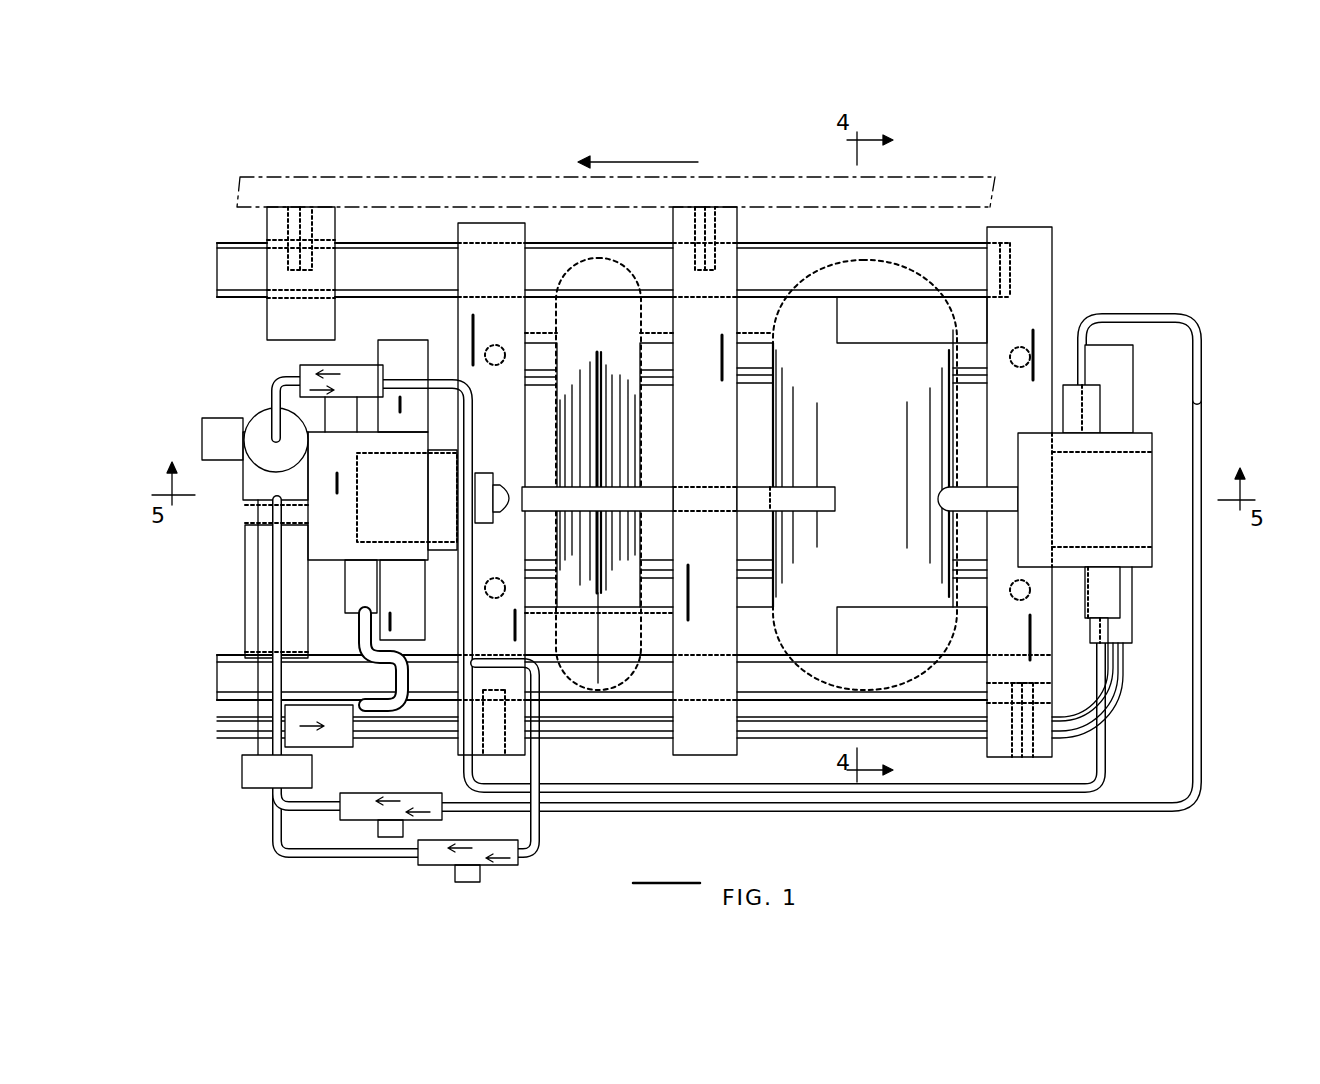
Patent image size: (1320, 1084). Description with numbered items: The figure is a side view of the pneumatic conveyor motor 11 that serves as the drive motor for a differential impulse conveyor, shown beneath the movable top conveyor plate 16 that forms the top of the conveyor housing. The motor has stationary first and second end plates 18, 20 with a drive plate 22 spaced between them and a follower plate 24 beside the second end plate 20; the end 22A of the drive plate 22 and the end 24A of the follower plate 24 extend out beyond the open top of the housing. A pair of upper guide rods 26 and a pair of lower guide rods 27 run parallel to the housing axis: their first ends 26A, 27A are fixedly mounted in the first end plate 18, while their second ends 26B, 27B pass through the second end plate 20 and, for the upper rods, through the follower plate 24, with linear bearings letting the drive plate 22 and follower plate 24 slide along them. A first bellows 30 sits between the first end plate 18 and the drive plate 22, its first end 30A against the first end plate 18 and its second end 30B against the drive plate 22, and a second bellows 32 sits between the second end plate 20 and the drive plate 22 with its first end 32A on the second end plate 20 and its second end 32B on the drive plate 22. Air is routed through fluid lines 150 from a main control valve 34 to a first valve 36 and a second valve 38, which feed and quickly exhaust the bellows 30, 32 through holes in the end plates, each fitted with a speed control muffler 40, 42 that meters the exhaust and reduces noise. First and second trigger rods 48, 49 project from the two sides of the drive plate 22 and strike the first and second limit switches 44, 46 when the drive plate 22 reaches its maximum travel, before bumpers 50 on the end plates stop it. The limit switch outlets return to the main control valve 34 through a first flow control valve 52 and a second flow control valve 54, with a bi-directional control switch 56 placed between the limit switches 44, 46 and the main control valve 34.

The pneumatic conveyor motor 11 is at (712, 118).
The movable top conveyor plate 16 is at (935, 177).
The first end plate 18 is at (1055, 232).
The second end plate 20 is at (525, 230).
The drive plate 22 is at (737, 225).
The end of drive plate 22A is at (705, 207).
The follower plate 24 is at (337, 222).
The end of follower plate 24A is at (302, 207).
The upper guide rods 26 is at (418, 243).
The first end of upper guide rod 26A is at (1000, 268).
The second end of upper guide rod 26B is at (225, 262).
The lower guide rods 27 is at (773, 597).
The first end of lower guide rod 27A is at (1013, 685).
The second end of lower guide rod 27B is at (220, 668).
The first bellows 30 is at (958, 362).
The first end of first bellows 30A is at (1092, 333).
The second end of first bellows 30B is at (762, 405).
The second bellows 32 is at (587, 357).
The first end of second bellows 32A is at (530, 455).
The second end of second bellows 32B is at (665, 455).
The main control valve 34 is at (247, 567).
The first valve 36 is at (1133, 483).
The second valve 38 is at (370, 490).
The speed control muffler 40 is at (1123, 392).
The speed control muffler 42 is at (397, 348).
The first limit switch 44 is at (1140, 530).
The second limit switch 46 is at (327, 550).
The first trigger rod 48 is at (828, 500).
The second trigger rod 49 is at (540, 503).
The bumpers 50 is at (908, 640).
The first flow control valve 52 is at (357, 815).
The second flow control valve 54 is at (437, 860).
The bi-directional control switch 56 is at (247, 770).
The fluid lines 150 is at (1118, 680).